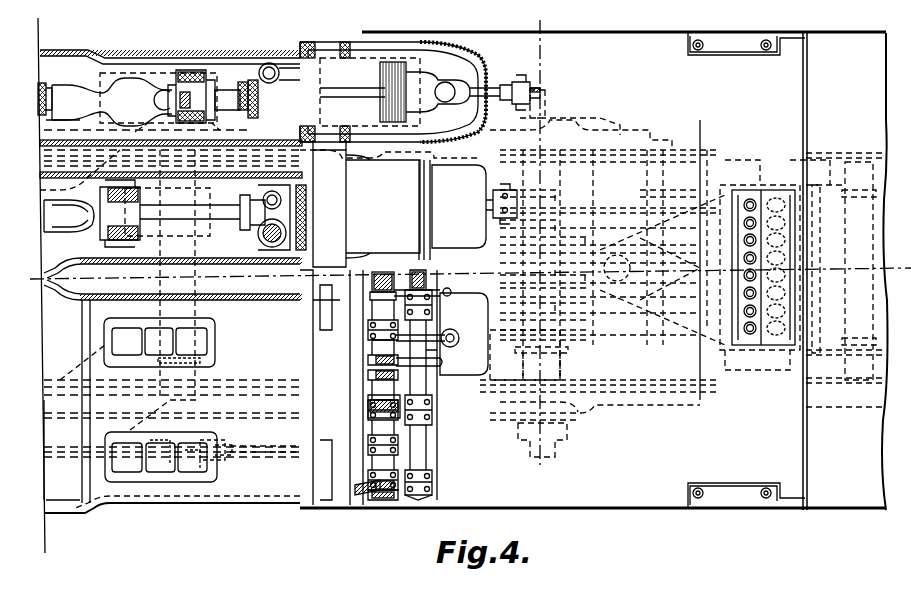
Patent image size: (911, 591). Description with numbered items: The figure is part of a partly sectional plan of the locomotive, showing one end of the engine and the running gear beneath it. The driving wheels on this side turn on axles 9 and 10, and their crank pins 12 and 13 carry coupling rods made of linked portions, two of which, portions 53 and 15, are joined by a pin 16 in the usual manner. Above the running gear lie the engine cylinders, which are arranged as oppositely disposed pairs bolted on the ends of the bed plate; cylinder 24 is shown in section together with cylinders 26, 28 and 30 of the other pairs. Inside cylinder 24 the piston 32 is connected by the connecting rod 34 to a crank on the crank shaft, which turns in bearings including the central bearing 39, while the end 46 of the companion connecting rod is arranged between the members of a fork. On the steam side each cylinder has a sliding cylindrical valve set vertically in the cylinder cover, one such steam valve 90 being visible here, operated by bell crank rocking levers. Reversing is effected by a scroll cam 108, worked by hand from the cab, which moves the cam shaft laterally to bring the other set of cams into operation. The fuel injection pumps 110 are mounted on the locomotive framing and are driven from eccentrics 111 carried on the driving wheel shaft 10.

The end of the connecting rod 46 is at (46, 90).
The connecting rod 34 is at (70, 92).
The piston 32 is at (223, 94).
The central bearing 39 is at (274, 62).
The cylinder 24 is at (355, 62).
The steam valve 90 is at (257, 236).
The axle 9 is at (192, 306).
The cylinder 26 is at (372, 280).
The cylinder 28 is at (412, 282).
The eccentrics 111 is at (567, 203).
The fuel injection pumps 110 is at (755, 340).
The axle 10 is at (535, 368).
The scroll cam 108 is at (368, 408).
The pin 16 is at (215, 441).
The crank pin 12 is at (185, 449).
The coupling rod portion 15 is at (290, 452).
The coupling rod portion 53 is at (70, 452).
The crank pin 13 is at (560, 447).
The cylinder 30 is at (395, 483).